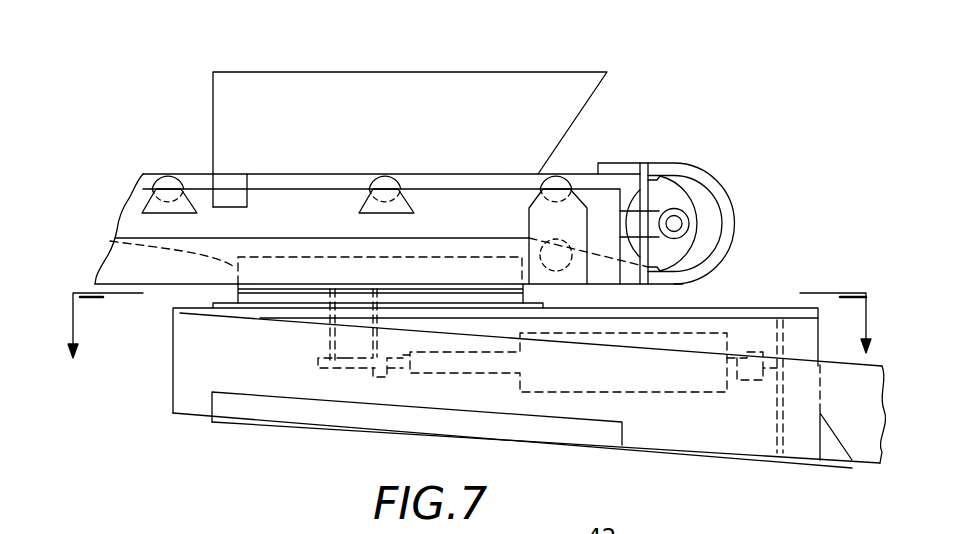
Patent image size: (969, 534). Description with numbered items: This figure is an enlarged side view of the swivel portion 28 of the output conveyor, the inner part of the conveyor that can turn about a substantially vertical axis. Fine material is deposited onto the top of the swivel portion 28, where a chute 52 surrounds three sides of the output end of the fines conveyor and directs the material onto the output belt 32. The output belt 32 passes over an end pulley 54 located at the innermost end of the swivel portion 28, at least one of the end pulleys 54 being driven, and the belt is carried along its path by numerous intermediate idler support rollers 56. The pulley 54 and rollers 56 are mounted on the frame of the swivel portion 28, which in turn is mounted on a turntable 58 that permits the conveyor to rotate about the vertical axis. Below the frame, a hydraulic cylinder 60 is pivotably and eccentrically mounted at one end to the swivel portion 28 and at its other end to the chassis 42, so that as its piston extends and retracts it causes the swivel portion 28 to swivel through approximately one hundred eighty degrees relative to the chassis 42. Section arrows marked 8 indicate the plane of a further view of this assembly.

The section line 8- 8 is at (483, 333).
The swivel portion 28 is at (640, 135).
The output belt 32 is at (197, 173).
The chassis 42 is at (798, 444).
The chute 52 is at (300, 83).
The end pulley 54 is at (702, 203).
The intermediate idler support rollers 56 is at (160, 187).
The turntable 58 is at (110, 241).
The hydraulic cylinder 60 is at (485, 374).